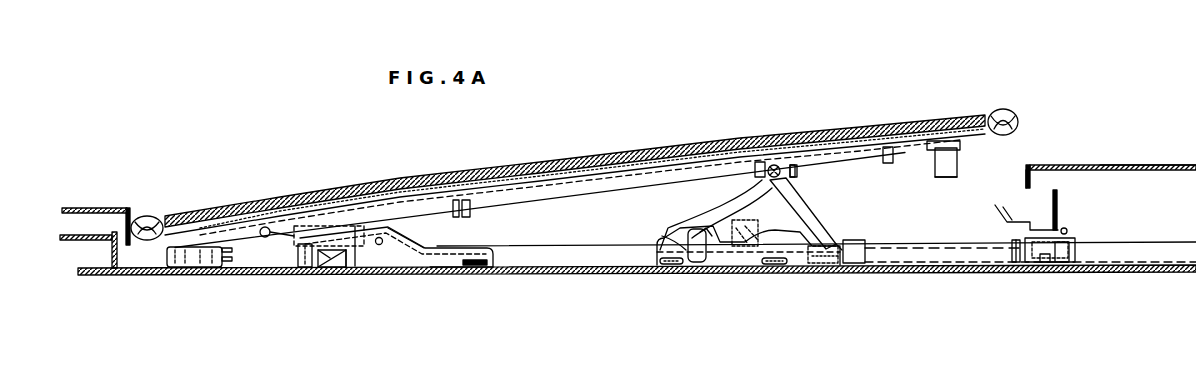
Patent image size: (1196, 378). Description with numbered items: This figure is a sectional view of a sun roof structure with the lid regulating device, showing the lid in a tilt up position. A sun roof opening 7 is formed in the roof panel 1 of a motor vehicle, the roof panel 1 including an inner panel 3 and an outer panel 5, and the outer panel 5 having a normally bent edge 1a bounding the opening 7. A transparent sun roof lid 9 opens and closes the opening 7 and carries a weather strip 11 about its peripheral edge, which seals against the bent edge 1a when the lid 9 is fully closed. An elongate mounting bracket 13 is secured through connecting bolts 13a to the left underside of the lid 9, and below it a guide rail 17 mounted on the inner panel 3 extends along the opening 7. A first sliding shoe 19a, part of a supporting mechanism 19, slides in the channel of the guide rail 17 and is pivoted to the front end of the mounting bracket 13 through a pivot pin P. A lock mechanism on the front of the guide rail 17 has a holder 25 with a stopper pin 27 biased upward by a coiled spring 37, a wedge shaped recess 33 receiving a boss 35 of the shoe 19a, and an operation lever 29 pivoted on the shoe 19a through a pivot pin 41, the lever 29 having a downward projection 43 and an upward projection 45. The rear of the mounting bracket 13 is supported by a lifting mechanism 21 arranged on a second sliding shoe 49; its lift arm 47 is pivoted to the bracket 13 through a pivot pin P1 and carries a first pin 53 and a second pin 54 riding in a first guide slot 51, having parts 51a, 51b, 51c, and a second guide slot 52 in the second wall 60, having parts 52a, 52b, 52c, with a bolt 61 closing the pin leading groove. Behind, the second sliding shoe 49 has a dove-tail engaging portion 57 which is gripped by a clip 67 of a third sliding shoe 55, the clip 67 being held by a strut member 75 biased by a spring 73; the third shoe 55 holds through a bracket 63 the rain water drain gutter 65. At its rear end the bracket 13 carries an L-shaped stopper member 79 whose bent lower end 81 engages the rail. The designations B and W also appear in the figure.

The roof panel 1 is at (1102, 163).
The bent edge 1a is at (131, 208).
The inner panel 3 is at (1112, 272).
The outer panel 5 is at (1138, 166).
The sun roof opening 7 is at (1009, 167).
The sun roof lid 9 is at (704, 141).
The weather strip 11 is at (150, 216).
The mounting bracket 13 is at (598, 190).
The connecting bolts 13a is at (471, 209).
The guide rail 17 is at (918, 276).
The supporting mechanism 19 is at (433, 272).
The first sliding shoe 19a is at (455, 266).
The lifting mechanism 21 is at (655, 268).
The holder 25 is at (312, 264).
The stopper pin 27 is at (299, 262).
The operation lever 29 is at (381, 246).
The wedge shaped recess 33 is at (336, 266).
The boss 35 is at (352, 262).
The coiled spring 37 is at (306, 232).
The pivot pin 41 is at (412, 254).
The downward projection 43 is at (278, 253).
The upward projection 45 is at (354, 226).
The lift arm 47 is at (832, 224).
The second sliding shoe 49 is at (866, 268).
The first guide slot 51 is at (746, 186).
The first horizontal part 51a is at (683, 247).
The second horizontal part 51b is at (704, 222).
The third inclined part 51c is at (760, 238).
The second guide slot 52 is at (748, 282).
The first inclined part 52a is at (712, 266).
The second generally horizontal part 52b is at (766, 263).
The third horizontal part 52c is at (812, 277).
The first pin 53 is at (827, 247).
The second pin 54 is at (833, 265).
The third sliding shoe 55 is at (683, 258).
The engaging portion 57 is at (860, 251).
The second wall 60 is at (798, 220).
The bolt 61 is at (745, 243).
The bracket 63 is at (1068, 231).
The rain water drain gutter 65 is at (1060, 205).
The clip 67 is at (1017, 264).
The biasing spring 73 is at (1062, 264).
The strut member 75 is at (1048, 264).
The L-shaped stopper member 79 is at (958, 158).
The bent lower end 81 is at (956, 178).
The pivot pin P is at (260, 232).
The pivot pin P1 is at (779, 152).
The direction B is at (849, 299).
The width W is at (1185, 212).